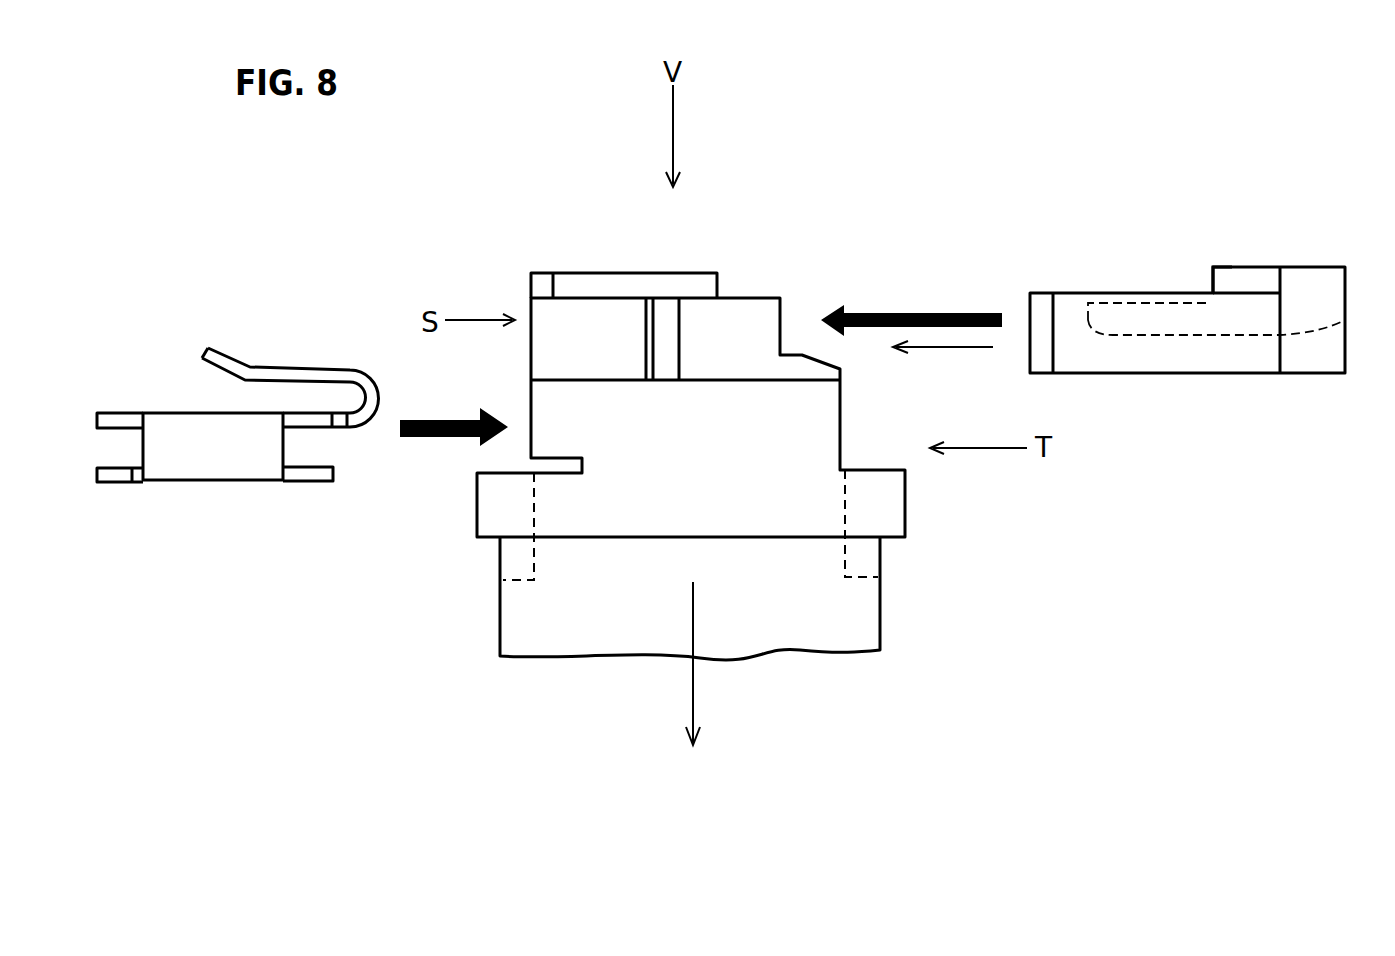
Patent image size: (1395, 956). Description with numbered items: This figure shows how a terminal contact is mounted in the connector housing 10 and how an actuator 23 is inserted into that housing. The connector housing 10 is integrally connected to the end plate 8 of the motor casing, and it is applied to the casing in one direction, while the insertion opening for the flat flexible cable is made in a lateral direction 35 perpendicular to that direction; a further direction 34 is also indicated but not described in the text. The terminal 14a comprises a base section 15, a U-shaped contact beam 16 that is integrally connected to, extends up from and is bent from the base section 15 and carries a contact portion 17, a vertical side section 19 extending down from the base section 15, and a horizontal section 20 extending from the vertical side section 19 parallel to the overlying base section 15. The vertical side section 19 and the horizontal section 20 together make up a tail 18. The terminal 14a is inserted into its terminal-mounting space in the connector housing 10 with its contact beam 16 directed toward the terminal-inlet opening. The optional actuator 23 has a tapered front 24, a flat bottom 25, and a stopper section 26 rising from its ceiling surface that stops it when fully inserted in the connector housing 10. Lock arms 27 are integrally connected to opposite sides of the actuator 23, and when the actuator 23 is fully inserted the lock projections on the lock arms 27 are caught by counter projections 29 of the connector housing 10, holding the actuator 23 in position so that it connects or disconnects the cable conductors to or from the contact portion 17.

The terminal 14a is at (233, 419).
The base section 15 is at (163, 413).
The U-shaped contact beam 16 is at (297, 378).
The contact portion 17 is at (205, 353).
The tail 18 is at (292, 493).
The vertical side section 19 is at (210, 458).
The horizontal section 20 is at (112, 478).
The connector housing 10 is at (685, 368).
The counter projection 29 is at (657, 322).
The end plate 8 is at (883, 510).
The arrow direction 34 is at (693, 707).
The lateral direction 35 is at (952, 348).
The actuator 23 is at (1184, 332).
The tapered front 24 is at (1100, 327).
The flat bottom 25 is at (1187, 340).
The stopper section 26 is at (1213, 275).
The lock arm 27 is at (1127, 357).